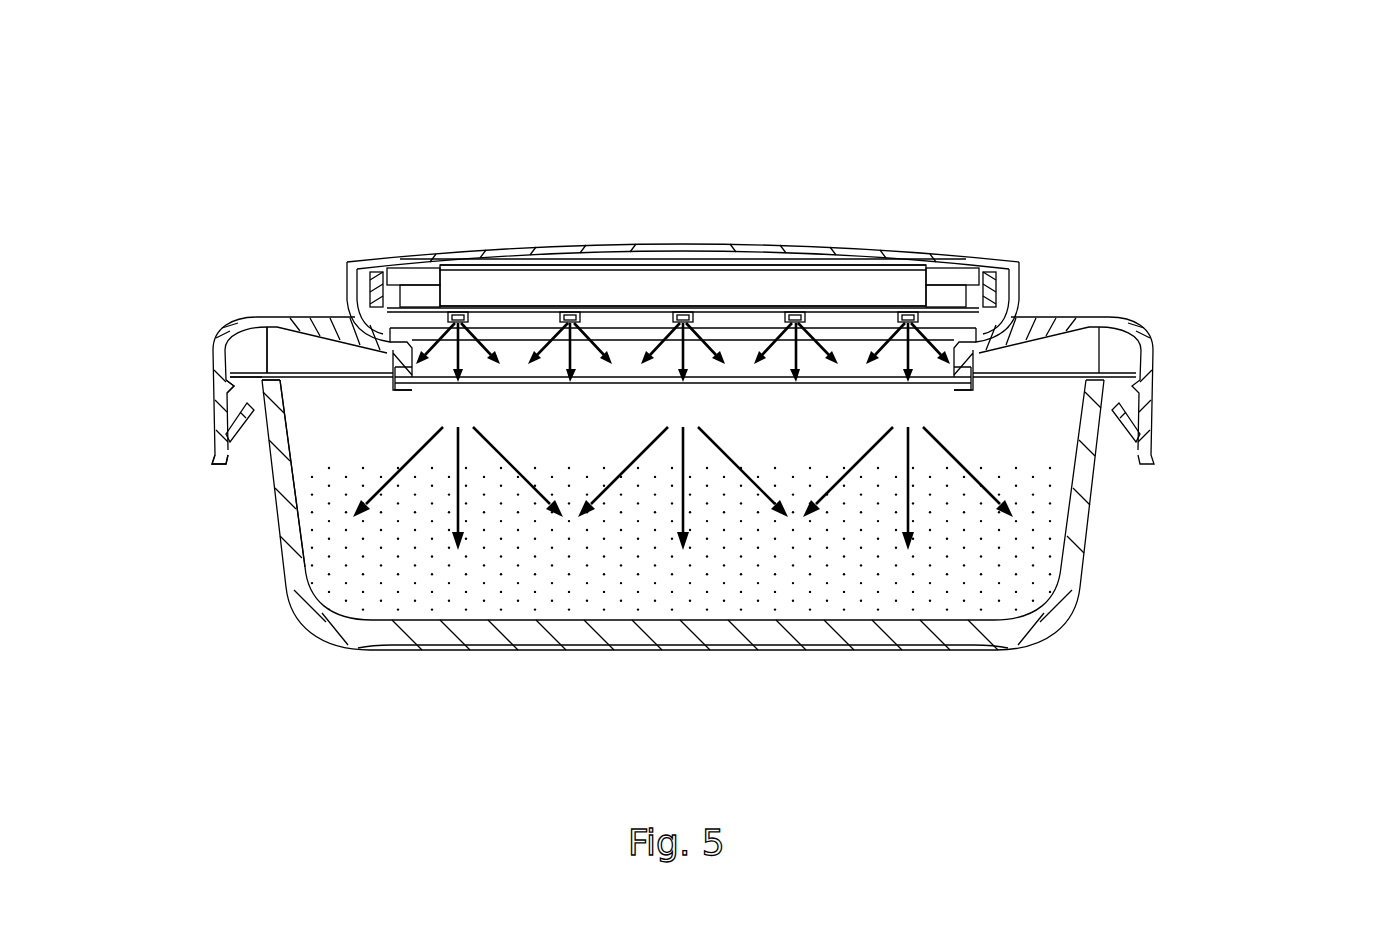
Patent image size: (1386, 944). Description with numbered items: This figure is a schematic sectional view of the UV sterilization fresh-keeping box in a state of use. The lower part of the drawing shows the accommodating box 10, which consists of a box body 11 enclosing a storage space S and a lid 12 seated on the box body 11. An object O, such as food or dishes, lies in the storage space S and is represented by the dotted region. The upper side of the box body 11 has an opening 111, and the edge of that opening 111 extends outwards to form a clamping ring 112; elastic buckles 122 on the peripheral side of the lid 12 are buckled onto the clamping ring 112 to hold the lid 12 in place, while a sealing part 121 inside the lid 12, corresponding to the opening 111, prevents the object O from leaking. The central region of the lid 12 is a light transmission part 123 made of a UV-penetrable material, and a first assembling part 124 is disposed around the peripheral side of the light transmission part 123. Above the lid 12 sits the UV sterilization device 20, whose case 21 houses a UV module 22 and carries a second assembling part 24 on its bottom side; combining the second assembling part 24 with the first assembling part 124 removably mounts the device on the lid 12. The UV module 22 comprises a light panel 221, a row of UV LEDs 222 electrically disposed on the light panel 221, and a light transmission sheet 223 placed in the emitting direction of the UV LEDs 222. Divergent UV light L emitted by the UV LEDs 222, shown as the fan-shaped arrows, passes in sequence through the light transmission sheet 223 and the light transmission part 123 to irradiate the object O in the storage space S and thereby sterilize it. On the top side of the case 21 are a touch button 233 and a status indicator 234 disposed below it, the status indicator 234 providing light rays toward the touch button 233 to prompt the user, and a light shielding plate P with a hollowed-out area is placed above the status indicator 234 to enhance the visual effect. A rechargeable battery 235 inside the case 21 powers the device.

The accommodating box 10 is at (735, 447).
The box body 11 is at (1102, 528).
The lid 12 is at (1157, 340).
The UV sterilization device 20 is at (700, 211).
The case 21 is at (805, 256).
The UV module 22 is at (652, 227).
The second assembling part 24 is at (395, 368).
The opening 111 is at (268, 358).
The clamping ring 112 is at (250, 383).
The sealing part 121 is at (268, 343).
The elastic buckles 122 is at (210, 380).
The light transmission part 123 is at (853, 384).
The first assembling part 124 is at (395, 380).
The light panel 221 is at (490, 310).
The UV LED 222 is at (457, 312).
The light transmission sheet 223 is at (520, 340).
The touch button 233 is at (632, 252).
The status indicator 234 is at (580, 255).
The rechargeable battery 235 is at (717, 290).
The light shielding plate P is at (604, 253).
The storage space S is at (340, 432).
The object O is at (370, 572).
The UV light L is at (953, 450).